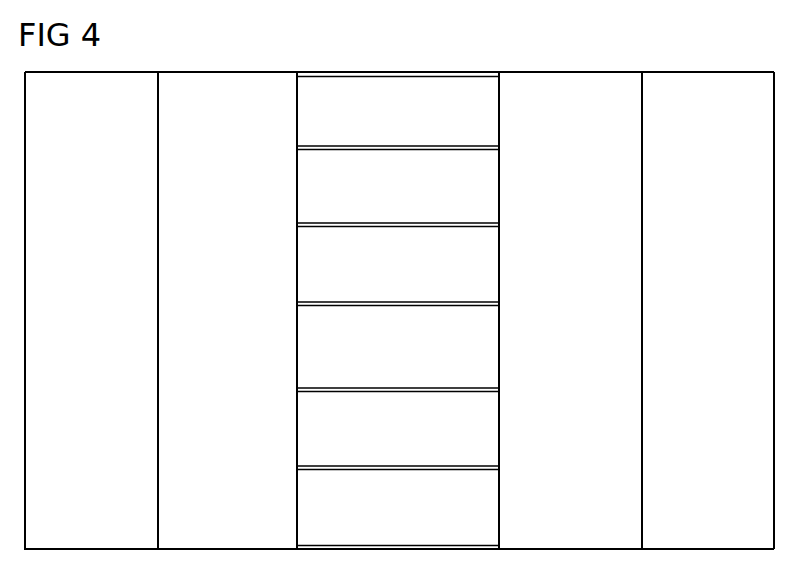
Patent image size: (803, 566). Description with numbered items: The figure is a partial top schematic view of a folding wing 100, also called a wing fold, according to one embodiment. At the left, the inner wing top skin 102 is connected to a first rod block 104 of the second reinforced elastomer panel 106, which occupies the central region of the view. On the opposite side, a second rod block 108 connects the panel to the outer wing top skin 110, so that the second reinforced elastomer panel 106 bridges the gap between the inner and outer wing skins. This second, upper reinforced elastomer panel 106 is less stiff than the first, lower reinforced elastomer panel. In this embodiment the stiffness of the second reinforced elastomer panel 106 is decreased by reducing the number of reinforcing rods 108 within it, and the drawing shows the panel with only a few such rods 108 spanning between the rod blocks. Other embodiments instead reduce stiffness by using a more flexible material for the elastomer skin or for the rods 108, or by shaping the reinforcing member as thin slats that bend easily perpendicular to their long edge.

The folding wing 100 is at (460, 44).
The inner wing top skin 102 is at (121, 80).
The first rod block 104 is at (230, 78).
The second reinforced elastomer panel 106 is at (313, 54).
The reinforcing rods 108 is at (566, 77).
The outer wing top skin 110 is at (690, 77).